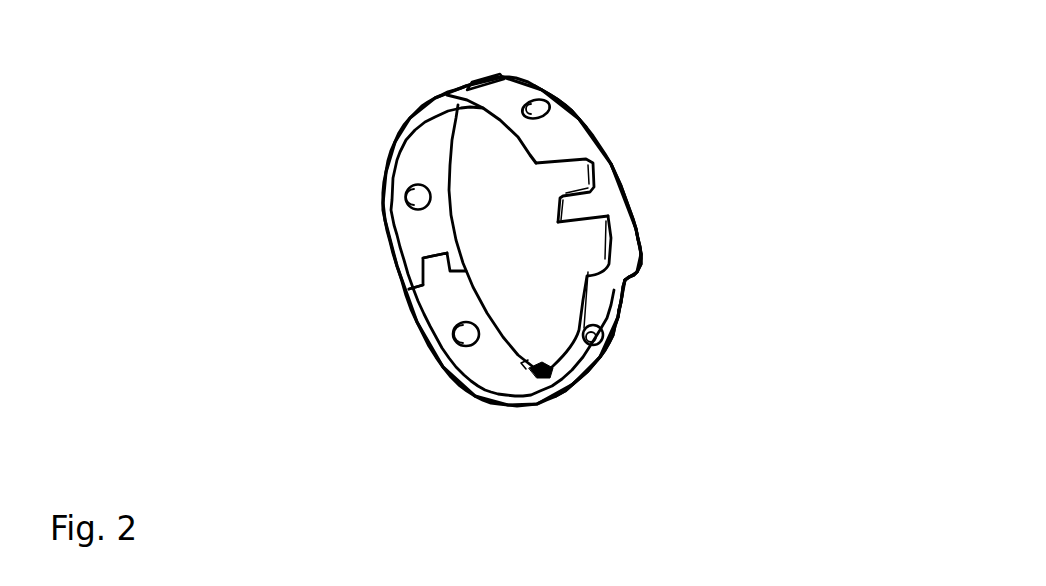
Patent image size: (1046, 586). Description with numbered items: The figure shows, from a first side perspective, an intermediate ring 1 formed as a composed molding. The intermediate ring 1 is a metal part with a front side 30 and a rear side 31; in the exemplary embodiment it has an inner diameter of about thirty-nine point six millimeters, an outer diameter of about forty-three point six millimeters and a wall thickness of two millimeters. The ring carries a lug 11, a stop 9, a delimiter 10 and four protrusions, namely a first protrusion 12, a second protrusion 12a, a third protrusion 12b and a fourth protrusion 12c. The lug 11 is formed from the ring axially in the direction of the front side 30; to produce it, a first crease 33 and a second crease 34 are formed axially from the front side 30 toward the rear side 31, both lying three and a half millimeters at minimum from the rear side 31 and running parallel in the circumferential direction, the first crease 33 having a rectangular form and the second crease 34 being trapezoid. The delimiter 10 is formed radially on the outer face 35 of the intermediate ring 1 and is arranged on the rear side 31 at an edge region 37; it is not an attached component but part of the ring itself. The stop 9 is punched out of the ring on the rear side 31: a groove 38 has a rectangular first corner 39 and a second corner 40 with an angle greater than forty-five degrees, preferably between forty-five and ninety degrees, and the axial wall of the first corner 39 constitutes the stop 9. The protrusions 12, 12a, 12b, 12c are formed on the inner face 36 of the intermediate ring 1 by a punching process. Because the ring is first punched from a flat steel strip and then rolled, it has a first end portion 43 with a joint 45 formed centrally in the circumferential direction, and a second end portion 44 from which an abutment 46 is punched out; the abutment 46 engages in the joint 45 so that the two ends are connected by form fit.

The intermediate ring 1 is at (786, 45).
The stop 9 is at (638, 273).
The delimiter 10 is at (500, 80).
The lug 11 is at (573, 211).
The first protrusion 12 is at (406, 199).
The second protrusion 12a is at (465, 346).
The third protrusion 12b is at (550, 109).
The fourth protrusion 12c is at (603, 343).
The front side 30 is at (333, 128).
The rear side 31 is at (743, 270).
The first crease 33 is at (594, 172).
The second crease 34 is at (585, 246).
The outer face 35 is at (456, 93).
The inner face 36 is at (491, 378).
The edge region 37 is at (562, 99).
The groove 38 is at (660, 362).
The first corner 39 is at (628, 281).
The second corner 40 is at (573, 365).
The first end portion 43 is at (422, 270).
The second end portion 44 is at (418, 288).
The joint 45 is at (422, 258).
The abutment 46 is at (445, 292).